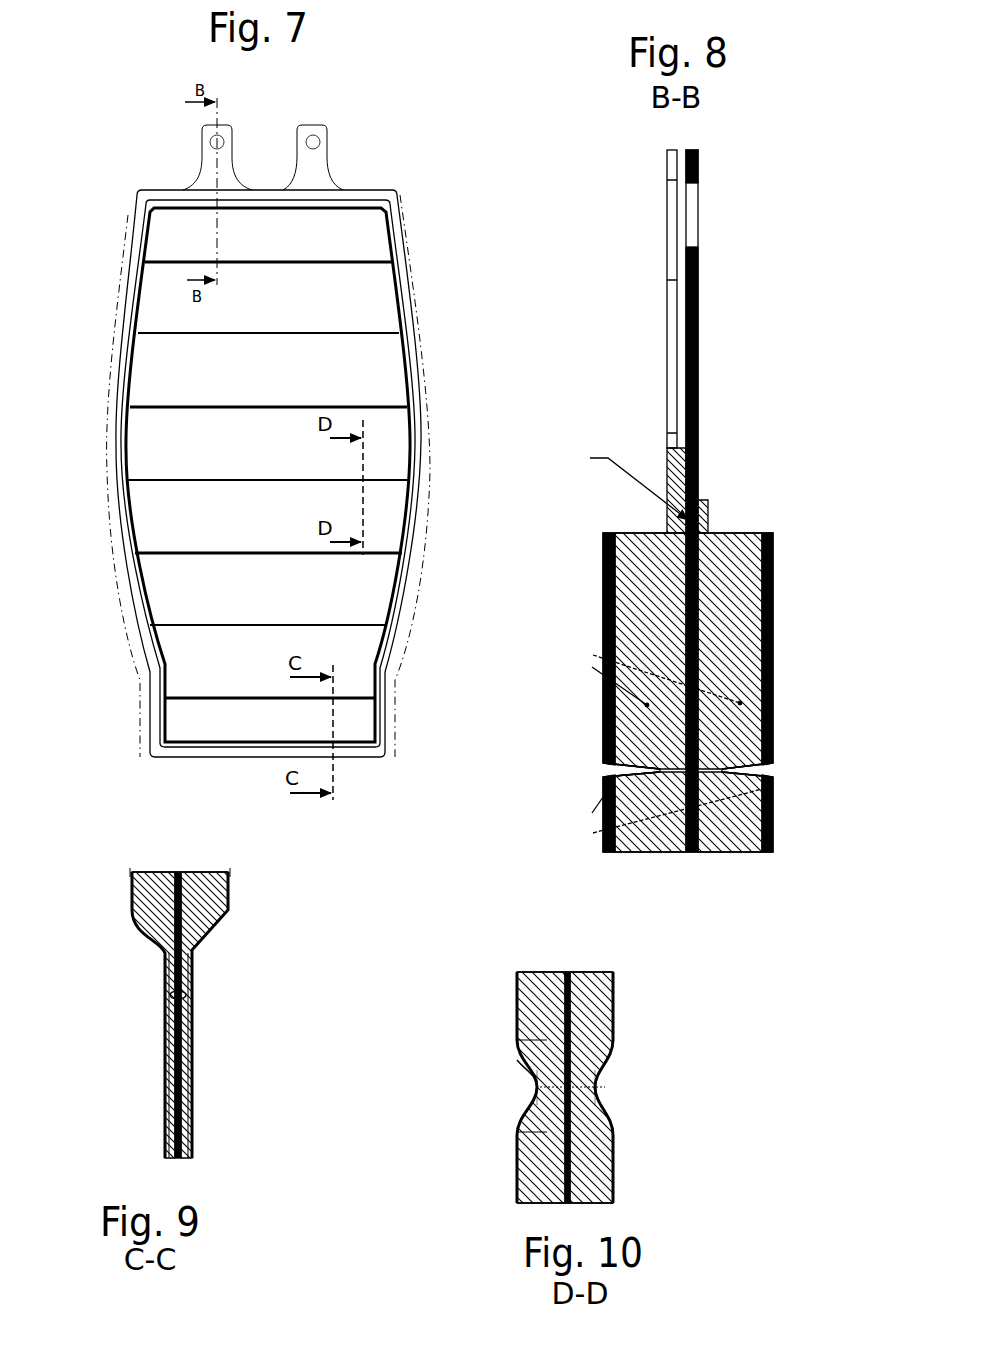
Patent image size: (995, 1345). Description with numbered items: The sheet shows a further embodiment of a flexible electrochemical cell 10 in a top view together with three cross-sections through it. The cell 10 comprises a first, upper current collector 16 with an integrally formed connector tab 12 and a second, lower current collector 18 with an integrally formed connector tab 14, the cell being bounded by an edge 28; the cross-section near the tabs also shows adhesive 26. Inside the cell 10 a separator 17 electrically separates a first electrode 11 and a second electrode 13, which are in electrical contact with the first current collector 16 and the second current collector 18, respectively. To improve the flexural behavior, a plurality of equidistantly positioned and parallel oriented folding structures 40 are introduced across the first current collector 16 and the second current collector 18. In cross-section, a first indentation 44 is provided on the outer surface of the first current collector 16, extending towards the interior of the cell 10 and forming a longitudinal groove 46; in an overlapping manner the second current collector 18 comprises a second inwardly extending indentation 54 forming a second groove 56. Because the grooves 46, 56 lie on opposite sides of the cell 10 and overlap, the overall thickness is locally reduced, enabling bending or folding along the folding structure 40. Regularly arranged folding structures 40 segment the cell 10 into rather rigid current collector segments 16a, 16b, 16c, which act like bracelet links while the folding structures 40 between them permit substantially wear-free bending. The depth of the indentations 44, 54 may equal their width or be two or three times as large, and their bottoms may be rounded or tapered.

In FIG. 7, the electrochemical cell 10 is at (383, 150).
In FIG. 8, the electrode 11 is at (743, 610).
In FIG. 9, the electrode 11 is at (210, 890).
In FIG. 10, the electrode 11 is at (593, 1170).
In FIG. 7, the connector tab 12 is at (205, 178).
In FIG. 8, the connector tab 12 is at (690, 260).
In FIG. 8, the electrode 13 is at (623, 610).
In FIG. 9, the electrode 13 is at (150, 880).
In FIG. 10, the electrode 13 is at (533, 1167).
In FIG. 7, the connector tab 14 is at (302, 133).
In FIG. 10, the connector tab 14 is at (594, 1075).
In FIG. 7, the current collector 16 is at (419, 242).
In FIG. 8, the current collector 16 is at (772, 568).
In FIG. 9, the current collector 16 is at (212, 993).
In FIG. 10, the current collector 16 is at (612, 1012).
In FIG. 7, the segment 16a is at (157, 242).
In FIG. 7, the segment 16b is at (157, 300).
In FIG. 7, the segment 16c is at (157, 357).
In FIG. 8, the separator 17 is at (687, 657).
In FIG. 9, the separator 17 is at (180, 875).
In FIG. 10, the separator 17 is at (570, 1048).
In FIG. 8, the current collector 18 is at (608, 722).
In FIG. 9, the current collector 18 is at (125, 1007).
In FIG. 10, the current collector 18 is at (517, 997).
In FIG. 8, the adhesive 26 is at (683, 458).
In FIG. 7, the edge 28 is at (105, 432).
In FIG. 7, the folding structure 40 is at (200, 552).
In FIG. 8, the folding structure 40 is at (820, 757).
In FIG. 10, the folding structure 40 is at (472, 1055).
In FIG. 8, the indentation 44 is at (737, 763).
In FIG. 8, the groove 46 is at (780, 770).
In FIG. 10, the groove 46 is at (609, 1093).
In FIG. 8, the indentation 54 is at (633, 777).
In FIG. 10, the indentation 54 is at (528, 1107).
In FIG. 8, the groove 56 is at (605, 765).
In FIG. 10, the groove 56 is at (510, 1087).